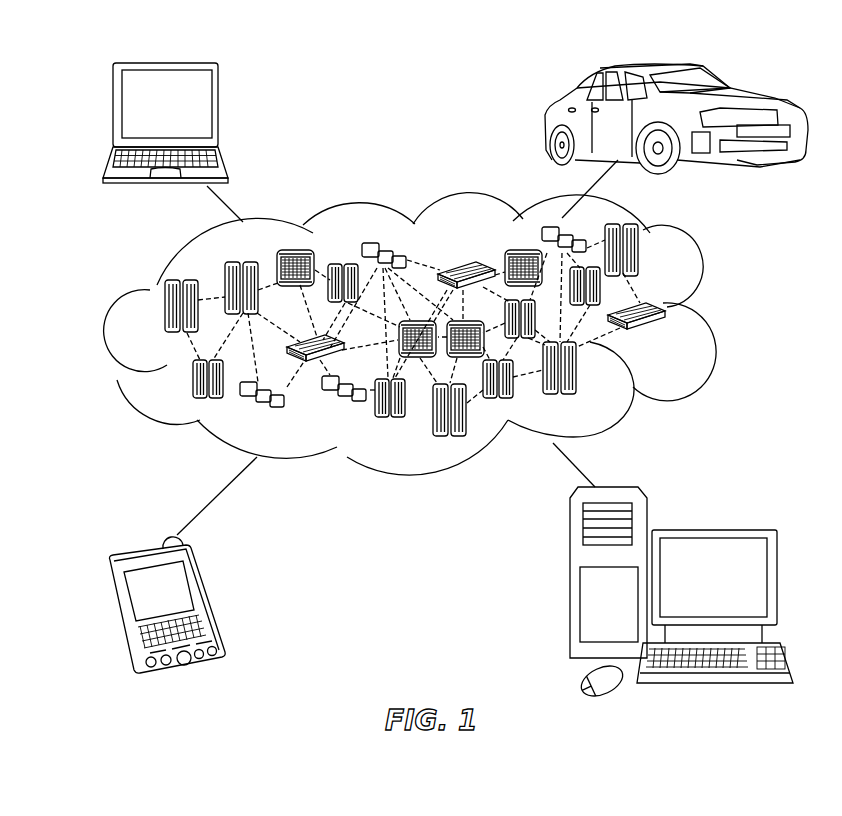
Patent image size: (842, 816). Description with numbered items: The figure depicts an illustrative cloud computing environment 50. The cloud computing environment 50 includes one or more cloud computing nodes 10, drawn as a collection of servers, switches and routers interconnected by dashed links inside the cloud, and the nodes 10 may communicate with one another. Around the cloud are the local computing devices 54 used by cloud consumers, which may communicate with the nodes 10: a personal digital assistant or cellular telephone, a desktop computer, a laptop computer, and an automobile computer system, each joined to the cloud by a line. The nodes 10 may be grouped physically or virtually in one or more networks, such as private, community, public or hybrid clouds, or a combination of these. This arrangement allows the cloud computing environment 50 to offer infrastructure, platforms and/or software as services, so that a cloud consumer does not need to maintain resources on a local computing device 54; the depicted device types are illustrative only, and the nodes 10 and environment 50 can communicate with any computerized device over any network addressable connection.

The cloud computing node 10 is at (426, 347).
The cloud computing environment 50 is at (710, 313).
The local computing device 54 is at (218, 113).